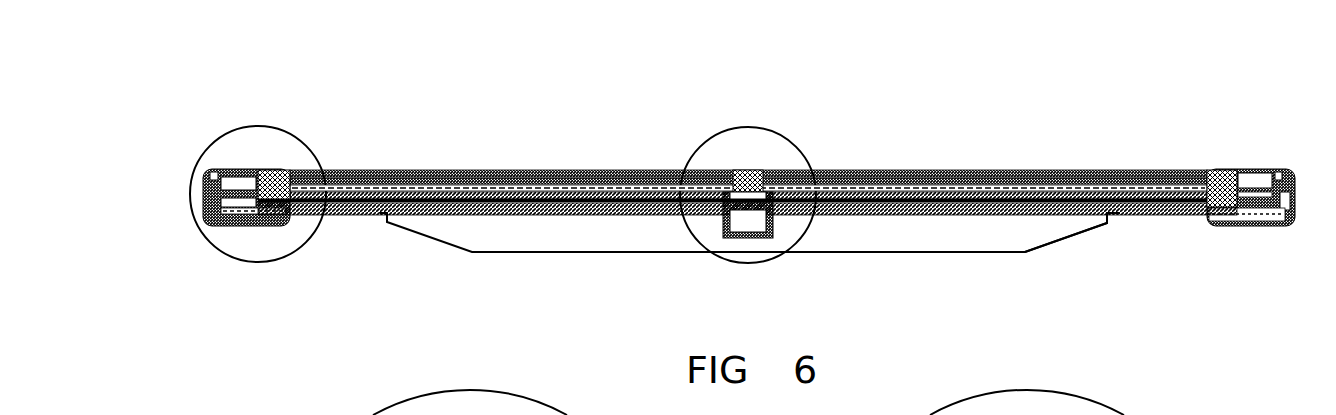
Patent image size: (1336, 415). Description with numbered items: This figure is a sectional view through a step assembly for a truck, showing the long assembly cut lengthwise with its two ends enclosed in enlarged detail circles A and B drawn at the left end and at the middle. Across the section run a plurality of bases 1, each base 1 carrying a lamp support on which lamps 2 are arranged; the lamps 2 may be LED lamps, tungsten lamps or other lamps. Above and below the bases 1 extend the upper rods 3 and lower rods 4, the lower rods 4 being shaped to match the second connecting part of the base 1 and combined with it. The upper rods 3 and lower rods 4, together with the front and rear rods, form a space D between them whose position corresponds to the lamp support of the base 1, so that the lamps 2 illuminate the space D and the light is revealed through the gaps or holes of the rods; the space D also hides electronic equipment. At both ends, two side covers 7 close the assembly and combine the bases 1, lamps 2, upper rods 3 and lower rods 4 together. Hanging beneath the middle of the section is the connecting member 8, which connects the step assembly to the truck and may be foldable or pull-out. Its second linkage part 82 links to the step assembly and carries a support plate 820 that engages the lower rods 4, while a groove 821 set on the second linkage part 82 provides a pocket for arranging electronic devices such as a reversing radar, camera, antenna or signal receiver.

The base 1 is at (747, 128).
The lamp 2 is at (748, 132).
The upper rod 3 is at (748, 125).
The lower rod 4 is at (747, 247).
The side cover 7 is at (734, 228).
The connecting member 8 is at (750, 273).
The second linkage part 82 is at (902, 235).
The support plate 820 is at (580, 217).
The groove 821 is at (747, 220).
The detail circle A is at (240, 155).
The detail circle B is at (730, 155).
The space D is at (1038, 186).